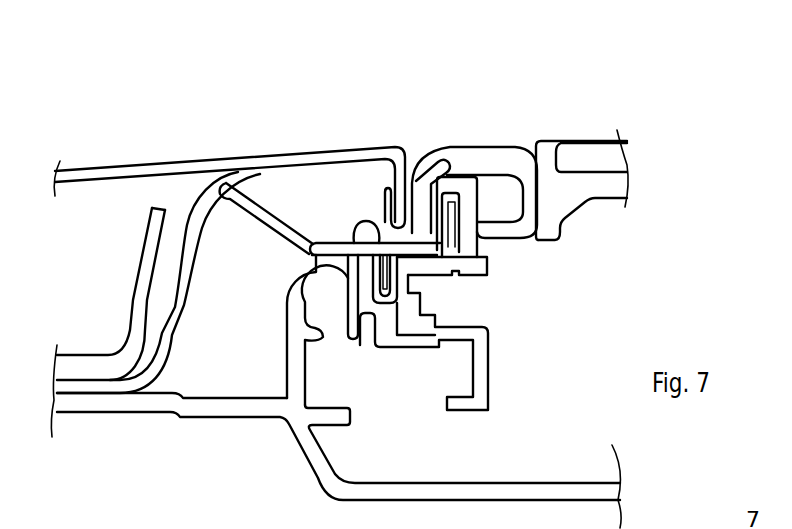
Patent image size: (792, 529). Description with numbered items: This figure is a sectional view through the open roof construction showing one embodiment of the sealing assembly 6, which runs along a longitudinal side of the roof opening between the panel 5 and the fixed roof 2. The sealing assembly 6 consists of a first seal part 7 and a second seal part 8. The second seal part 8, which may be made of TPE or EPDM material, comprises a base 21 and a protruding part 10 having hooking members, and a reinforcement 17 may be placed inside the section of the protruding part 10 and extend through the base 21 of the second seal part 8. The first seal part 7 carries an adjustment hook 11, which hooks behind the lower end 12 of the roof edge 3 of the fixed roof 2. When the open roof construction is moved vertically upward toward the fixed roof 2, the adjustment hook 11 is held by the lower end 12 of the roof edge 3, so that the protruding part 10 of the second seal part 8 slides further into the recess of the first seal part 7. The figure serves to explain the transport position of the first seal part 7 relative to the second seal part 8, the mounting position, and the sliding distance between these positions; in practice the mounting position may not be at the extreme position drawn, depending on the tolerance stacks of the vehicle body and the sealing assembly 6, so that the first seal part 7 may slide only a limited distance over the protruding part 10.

The fixed roof 2 is at (300, 151).
The roof edge 3 is at (415, 157).
The panel 5 is at (598, 134).
The sealing assembly 6 is at (258, 237).
The first seal part 7 is at (474, 162).
The second seal part 8 is at (343, 255).
The protruding part 10 is at (485, 238).
The adjustment hook 11 is at (375, 237).
The lower end 12 is at (387, 224).
The reinforcement 17 is at (455, 223).
The base 21 is at (345, 252).